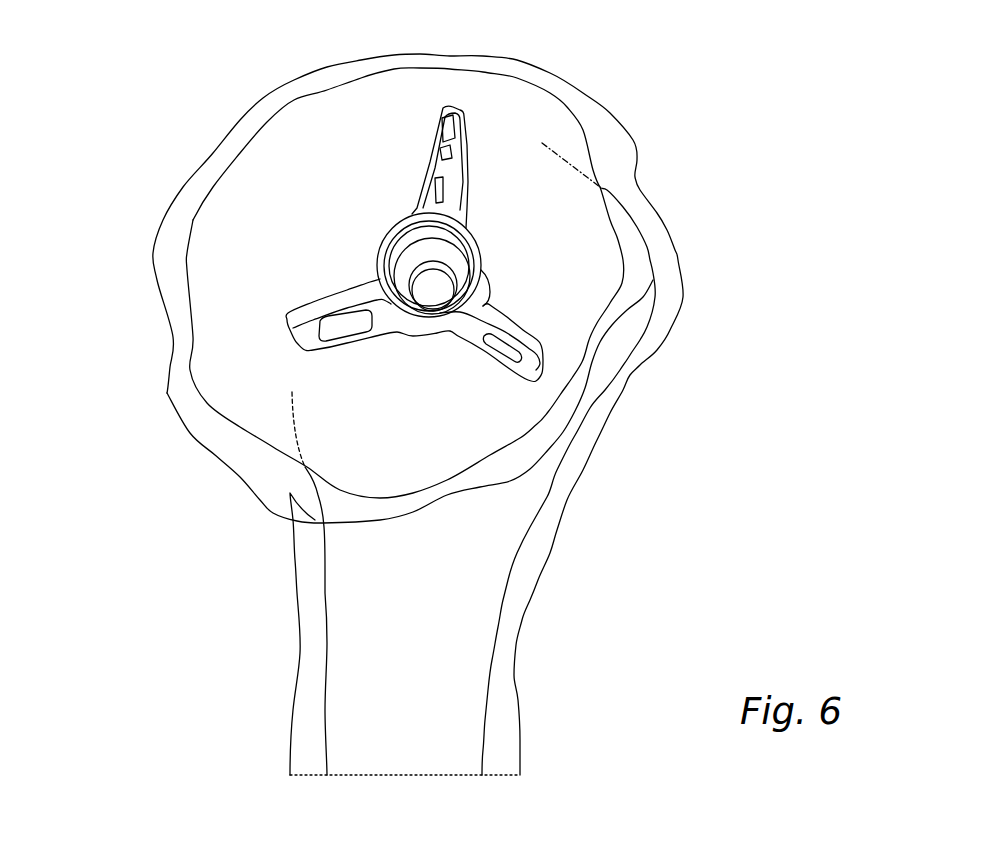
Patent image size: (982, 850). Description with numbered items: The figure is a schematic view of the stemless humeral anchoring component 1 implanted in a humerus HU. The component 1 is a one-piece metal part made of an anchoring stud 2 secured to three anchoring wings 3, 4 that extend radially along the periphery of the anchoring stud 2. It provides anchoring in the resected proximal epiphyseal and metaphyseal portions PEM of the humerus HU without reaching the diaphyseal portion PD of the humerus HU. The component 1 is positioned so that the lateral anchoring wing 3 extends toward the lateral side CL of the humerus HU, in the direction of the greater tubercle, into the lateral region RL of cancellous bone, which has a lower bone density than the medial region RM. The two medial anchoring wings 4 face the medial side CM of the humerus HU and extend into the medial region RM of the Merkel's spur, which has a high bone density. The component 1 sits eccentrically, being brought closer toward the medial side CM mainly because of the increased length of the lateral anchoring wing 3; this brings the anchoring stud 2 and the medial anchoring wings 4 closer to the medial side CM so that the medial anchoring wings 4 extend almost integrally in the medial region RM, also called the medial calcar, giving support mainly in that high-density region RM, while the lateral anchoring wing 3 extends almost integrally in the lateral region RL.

The stemless humeral anchoring component 1 is at (407, 225).
The anchoring stud 2 is at (383, 233).
The lateral anchoring wing 3 is at (466, 128).
The medial anchoring wings 4 is at (310, 338).
The lateral side CL is at (456, 68).
The lateral region RL is at (345, 117).
The medial region RM is at (500, 402).
The medial side CM is at (347, 482).
The proximal epiphyseal and metaphyseal portions PEM is at (188, 435).
The humerus HU is at (552, 556).
The diaphyseal portion PD is at (527, 700).